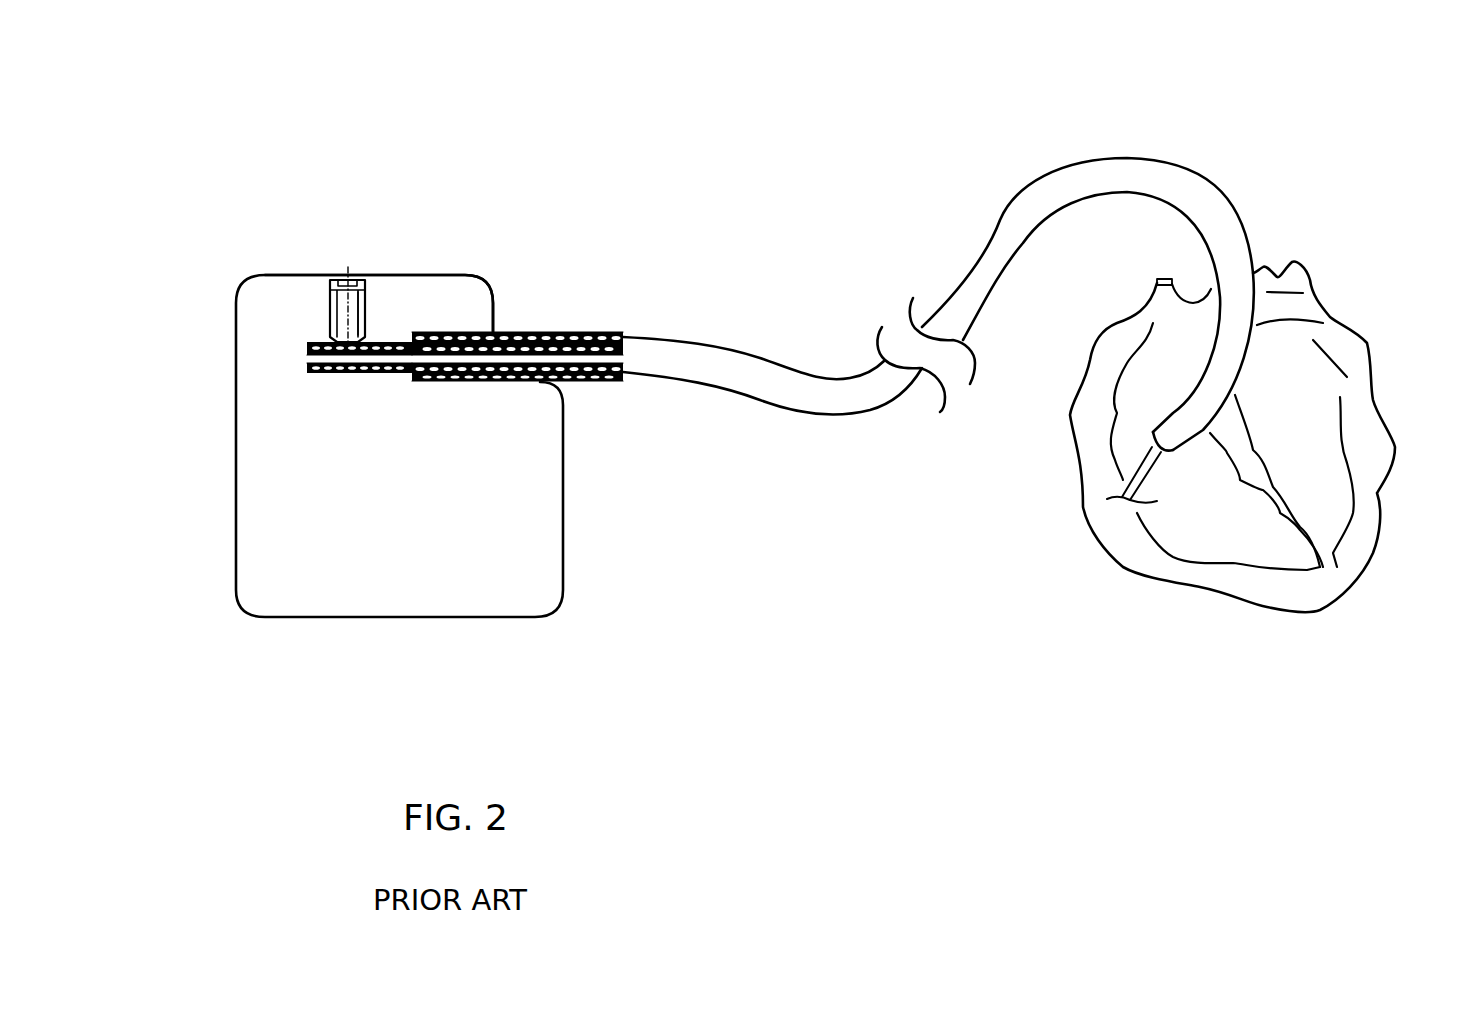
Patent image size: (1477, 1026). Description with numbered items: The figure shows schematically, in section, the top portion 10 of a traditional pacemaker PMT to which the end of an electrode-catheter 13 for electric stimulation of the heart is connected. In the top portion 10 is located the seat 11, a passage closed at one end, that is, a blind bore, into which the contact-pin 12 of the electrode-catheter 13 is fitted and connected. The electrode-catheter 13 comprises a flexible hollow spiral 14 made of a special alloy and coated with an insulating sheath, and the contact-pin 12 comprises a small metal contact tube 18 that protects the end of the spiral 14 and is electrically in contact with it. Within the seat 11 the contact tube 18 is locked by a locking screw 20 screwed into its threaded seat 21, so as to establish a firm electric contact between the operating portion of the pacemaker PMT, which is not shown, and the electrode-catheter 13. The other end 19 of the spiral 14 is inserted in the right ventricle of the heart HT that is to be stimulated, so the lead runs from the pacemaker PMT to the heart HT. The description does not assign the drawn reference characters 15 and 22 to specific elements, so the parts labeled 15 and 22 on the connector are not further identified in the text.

The top portion 10 is at (438, 297).
The seat 11 is at (330, 375).
The contact-pin 12 is at (608, 317).
The electrode-catheter 13 is at (852, 407).
The flexible hollow spiral 14 is at (603, 373).
The connector sleeve 15 is at (613, 332).
The contact tube 18 is at (303, 357).
The other end of spiral 19 is at (1133, 475).
The locking screw 20 is at (333, 277).
The threaded seat 21 is at (378, 277).
The connector bore 22 is at (479, 312).
The traditional pacemaker PMT is at (542, 538).
The heart HT is at (1362, 477).